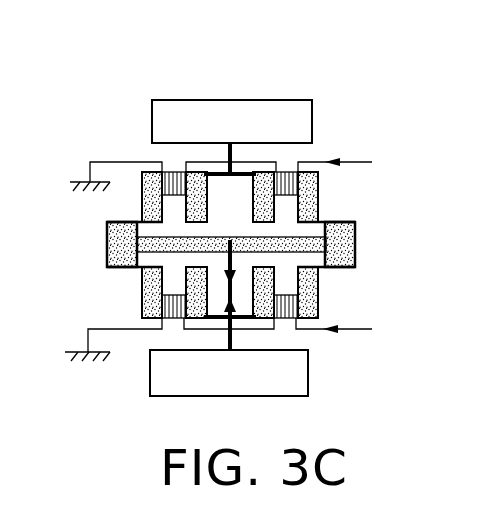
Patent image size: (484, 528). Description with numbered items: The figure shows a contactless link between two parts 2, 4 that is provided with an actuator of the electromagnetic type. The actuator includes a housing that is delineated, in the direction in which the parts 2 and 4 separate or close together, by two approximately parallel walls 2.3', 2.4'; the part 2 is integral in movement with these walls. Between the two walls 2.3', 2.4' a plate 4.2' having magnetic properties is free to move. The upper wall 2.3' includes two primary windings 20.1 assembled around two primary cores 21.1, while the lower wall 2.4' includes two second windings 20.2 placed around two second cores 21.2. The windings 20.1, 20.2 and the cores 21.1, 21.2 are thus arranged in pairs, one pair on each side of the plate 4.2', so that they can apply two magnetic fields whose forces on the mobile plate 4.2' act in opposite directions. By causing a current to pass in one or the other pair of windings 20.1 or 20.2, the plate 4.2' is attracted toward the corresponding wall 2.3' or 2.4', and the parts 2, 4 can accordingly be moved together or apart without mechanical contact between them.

The part 2 is at (318, 117).
The part 4 is at (314, 374).
The primary windings 20.1 is at (181, 172).
The second windings 20.2 is at (158, 303).
The primary cores 21.1 is at (313, 197).
The second cores 21.2 is at (310, 288).
The plate 4.2' is at (263, 244).
The wall 2.3' is at (120, 133).
The wall 2.4' is at (117, 354).